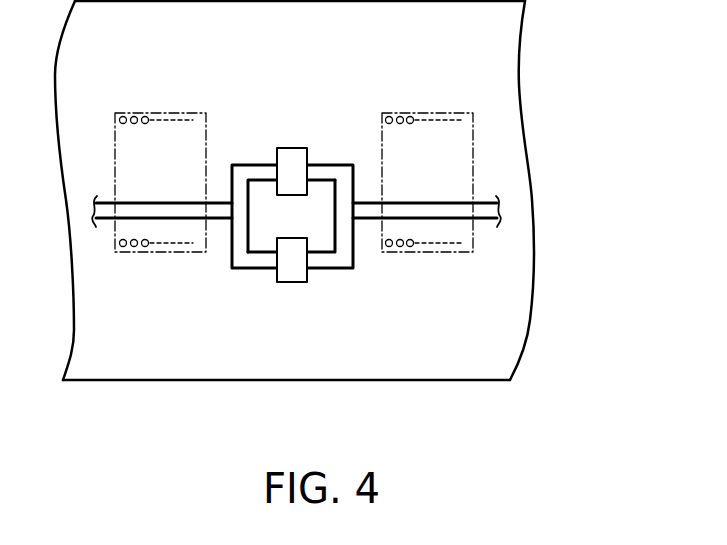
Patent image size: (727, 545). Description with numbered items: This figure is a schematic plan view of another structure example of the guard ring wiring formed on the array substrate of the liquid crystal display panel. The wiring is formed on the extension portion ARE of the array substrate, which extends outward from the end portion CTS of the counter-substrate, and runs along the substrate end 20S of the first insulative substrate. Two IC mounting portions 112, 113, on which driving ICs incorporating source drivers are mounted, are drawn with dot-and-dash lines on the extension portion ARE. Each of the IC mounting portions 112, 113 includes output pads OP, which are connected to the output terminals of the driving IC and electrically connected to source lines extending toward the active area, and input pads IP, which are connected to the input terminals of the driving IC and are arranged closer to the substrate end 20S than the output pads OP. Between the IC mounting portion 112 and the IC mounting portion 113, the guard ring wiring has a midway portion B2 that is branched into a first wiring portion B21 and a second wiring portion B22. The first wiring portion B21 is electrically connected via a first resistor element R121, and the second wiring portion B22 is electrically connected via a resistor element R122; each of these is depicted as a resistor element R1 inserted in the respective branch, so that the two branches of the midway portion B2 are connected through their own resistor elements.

The substrate end 20S is at (425, 381).
The end portion of the counter-substrate CTS is at (495, 3).
The extension portion ARE is at (500, 317).
The midway portion B2 is at (253, 156).
The first wiring portion B21 is at (262, 176).
The second wiring portion B22 is at (335, 262).
The resistor element R1 is at (292, 215).
The first resistor element R121 is at (292, 148).
The first resistor element R122 is at (292, 283).
The IC mounting portion 112 is at (173, 112).
The IC mounting portion 113 is at (442, 112).
The output pads OP is at (123, 116).
The input pads IP is at (123, 247).